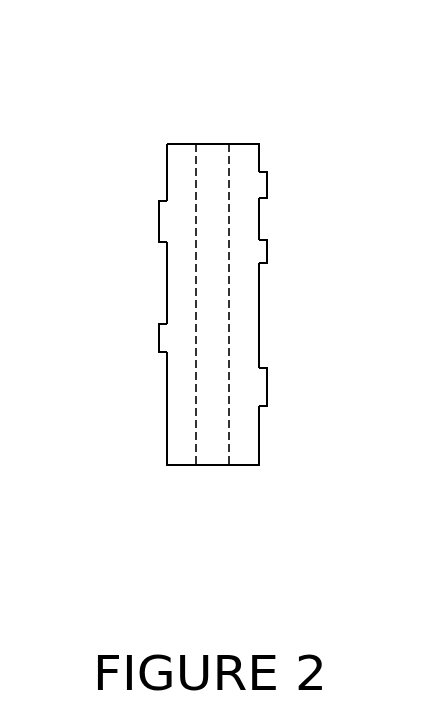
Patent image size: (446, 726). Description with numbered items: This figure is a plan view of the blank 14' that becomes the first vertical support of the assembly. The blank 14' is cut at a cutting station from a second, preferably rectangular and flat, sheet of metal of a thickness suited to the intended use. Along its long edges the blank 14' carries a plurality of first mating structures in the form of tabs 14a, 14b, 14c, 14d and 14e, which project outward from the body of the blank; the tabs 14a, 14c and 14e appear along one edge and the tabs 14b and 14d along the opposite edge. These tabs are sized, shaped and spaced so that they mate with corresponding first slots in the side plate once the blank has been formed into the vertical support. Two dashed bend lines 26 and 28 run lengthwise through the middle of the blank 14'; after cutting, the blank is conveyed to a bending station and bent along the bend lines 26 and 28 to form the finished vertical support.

The blank 14' is at (242, 254).
The tab 14a is at (267, 183).
The tab 14b is at (158, 218).
The tab 14c is at (267, 250).
The tab 14d is at (158, 345).
The tab 14e is at (267, 368).
The bend line 26 is at (195, 305).
The bend line 28 is at (229, 337).